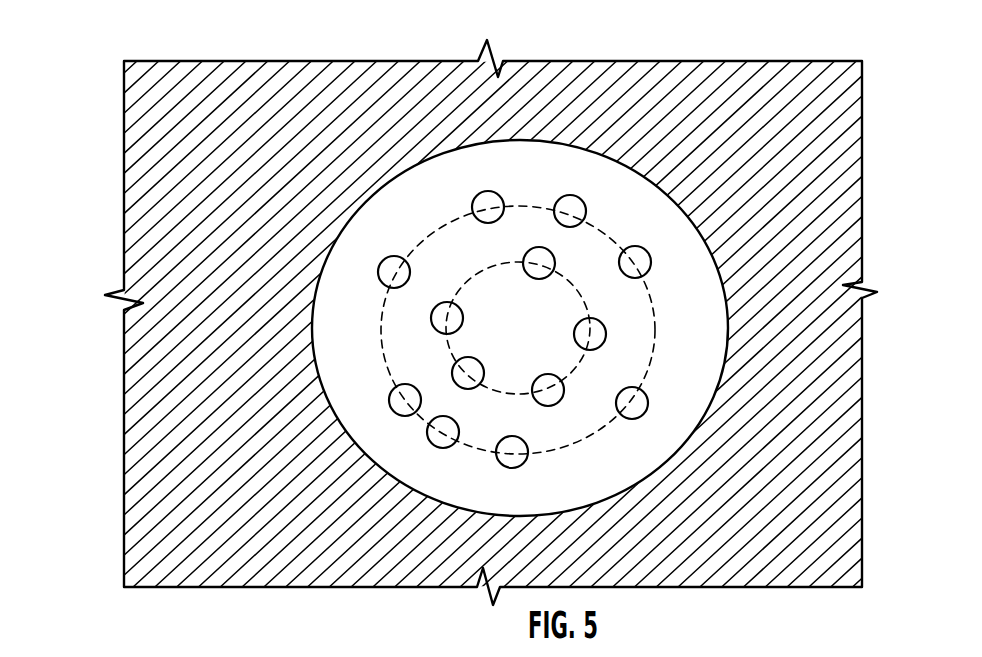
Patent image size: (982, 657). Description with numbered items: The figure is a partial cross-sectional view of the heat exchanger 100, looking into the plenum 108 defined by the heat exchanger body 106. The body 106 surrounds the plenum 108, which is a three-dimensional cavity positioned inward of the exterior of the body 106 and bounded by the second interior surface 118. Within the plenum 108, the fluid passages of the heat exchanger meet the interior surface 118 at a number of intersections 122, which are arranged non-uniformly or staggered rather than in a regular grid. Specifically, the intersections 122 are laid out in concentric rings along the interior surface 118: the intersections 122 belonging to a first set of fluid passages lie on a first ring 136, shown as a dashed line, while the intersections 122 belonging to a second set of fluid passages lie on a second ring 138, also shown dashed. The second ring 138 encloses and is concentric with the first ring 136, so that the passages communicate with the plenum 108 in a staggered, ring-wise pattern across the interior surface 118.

The heat exchanger 100 is at (88, 65).
The heat exchanger body 106 is at (172, 332).
The plenum 108 is at (689, 408).
The second interior surface 118 is at (370, 344).
The intersections 122 is at (394, 256).
The first ring 136 is at (457, 290).
The second ring 138 is at (437, 227).